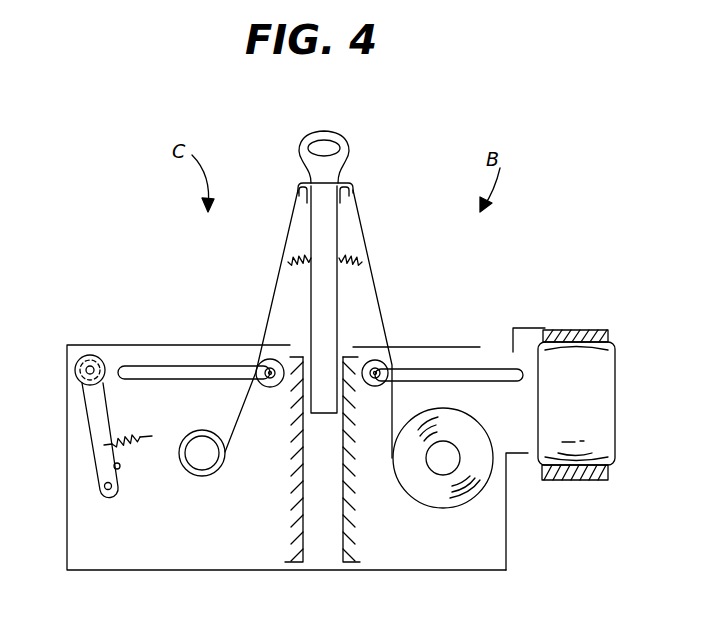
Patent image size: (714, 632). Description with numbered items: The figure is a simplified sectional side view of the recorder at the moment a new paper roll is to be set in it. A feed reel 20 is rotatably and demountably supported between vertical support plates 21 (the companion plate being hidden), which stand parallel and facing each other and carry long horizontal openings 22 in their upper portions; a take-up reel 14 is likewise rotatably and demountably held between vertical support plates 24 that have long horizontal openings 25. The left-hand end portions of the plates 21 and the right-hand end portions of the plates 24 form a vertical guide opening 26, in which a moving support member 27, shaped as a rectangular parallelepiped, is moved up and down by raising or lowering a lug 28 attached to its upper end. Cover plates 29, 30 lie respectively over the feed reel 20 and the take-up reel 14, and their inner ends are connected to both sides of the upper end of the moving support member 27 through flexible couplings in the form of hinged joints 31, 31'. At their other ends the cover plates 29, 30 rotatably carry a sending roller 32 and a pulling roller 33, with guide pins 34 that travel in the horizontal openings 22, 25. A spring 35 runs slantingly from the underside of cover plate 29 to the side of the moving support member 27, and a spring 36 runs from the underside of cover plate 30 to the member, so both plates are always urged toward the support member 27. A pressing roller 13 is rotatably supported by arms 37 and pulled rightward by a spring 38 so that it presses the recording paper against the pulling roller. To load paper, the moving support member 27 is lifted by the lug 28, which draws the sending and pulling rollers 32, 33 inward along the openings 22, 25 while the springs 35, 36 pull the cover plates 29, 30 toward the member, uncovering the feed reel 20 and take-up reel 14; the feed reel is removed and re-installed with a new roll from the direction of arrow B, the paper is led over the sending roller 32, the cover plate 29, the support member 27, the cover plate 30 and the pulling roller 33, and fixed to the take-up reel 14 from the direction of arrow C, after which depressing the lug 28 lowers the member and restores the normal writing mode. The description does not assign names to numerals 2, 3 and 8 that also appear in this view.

The end cap 2 is at (605, 330).
The support bracket 3 is at (536, 328).
The container 8 is at (605, 395).
The pressing roller 13 is at (97, 360).
The take-up reel 14 is at (206, 463).
The feed reel 20 is at (448, 463).
The vertical support plate 21 is at (437, 556).
The horizontal opening 22 is at (471, 383).
The vertical support plate 24 is at (180, 555).
The horizontal opening 25 is at (171, 380).
The vertical guide opening 26 is at (322, 545).
The moving support member 27 is at (326, 400).
The lug 28 is at (344, 140).
The cover plate 29 is at (385, 334).
The cover plate 30 is at (266, 337).
The hinged joint 31 is at (353, 319).
The hinged joint 31' is at (266, 318).
The sending roller 32 is at (378, 388).
The pulling roller 33 is at (273, 388).
The guide pin 34 is at (382, 370).
The spring 35 is at (348, 270).
The spring 36 is at (300, 270).
The arm 37 is at (95, 428).
The spring 38 is at (141, 444).